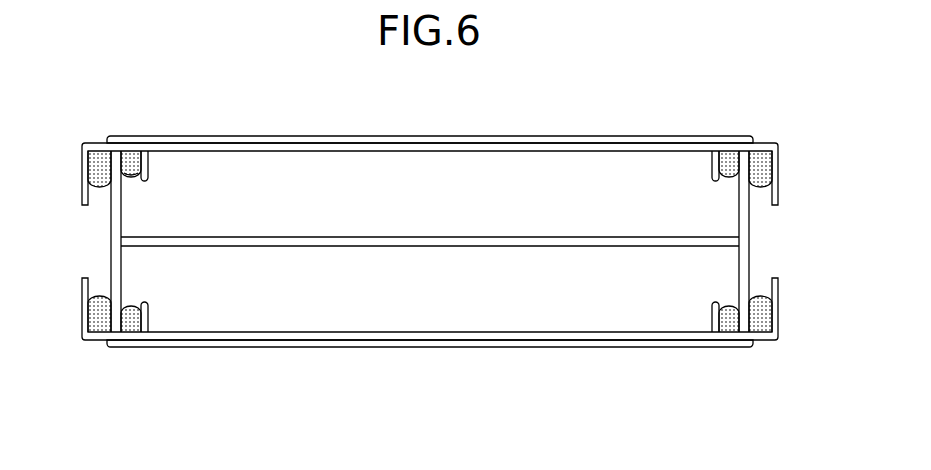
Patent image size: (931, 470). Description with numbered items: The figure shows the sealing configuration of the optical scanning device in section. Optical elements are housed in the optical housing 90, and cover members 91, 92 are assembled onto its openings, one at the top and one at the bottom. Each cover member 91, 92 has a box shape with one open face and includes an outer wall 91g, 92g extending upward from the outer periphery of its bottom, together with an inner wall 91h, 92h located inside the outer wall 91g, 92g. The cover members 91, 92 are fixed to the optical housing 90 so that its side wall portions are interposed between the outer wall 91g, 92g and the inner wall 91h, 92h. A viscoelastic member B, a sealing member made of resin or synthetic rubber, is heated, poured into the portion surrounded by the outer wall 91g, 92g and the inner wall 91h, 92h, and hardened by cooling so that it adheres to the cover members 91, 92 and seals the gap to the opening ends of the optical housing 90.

The optical housing 90 is at (455, 243).
The cover member 91 is at (385, 136).
The cover member 92 is at (405, 339).
The outer wall 91g is at (82, 175).
The inner wall 91h is at (148, 167).
The outer wall 92g is at (82, 313).
The inner wall 92h is at (148, 317).
The viscoelastic member B is at (130, 177).